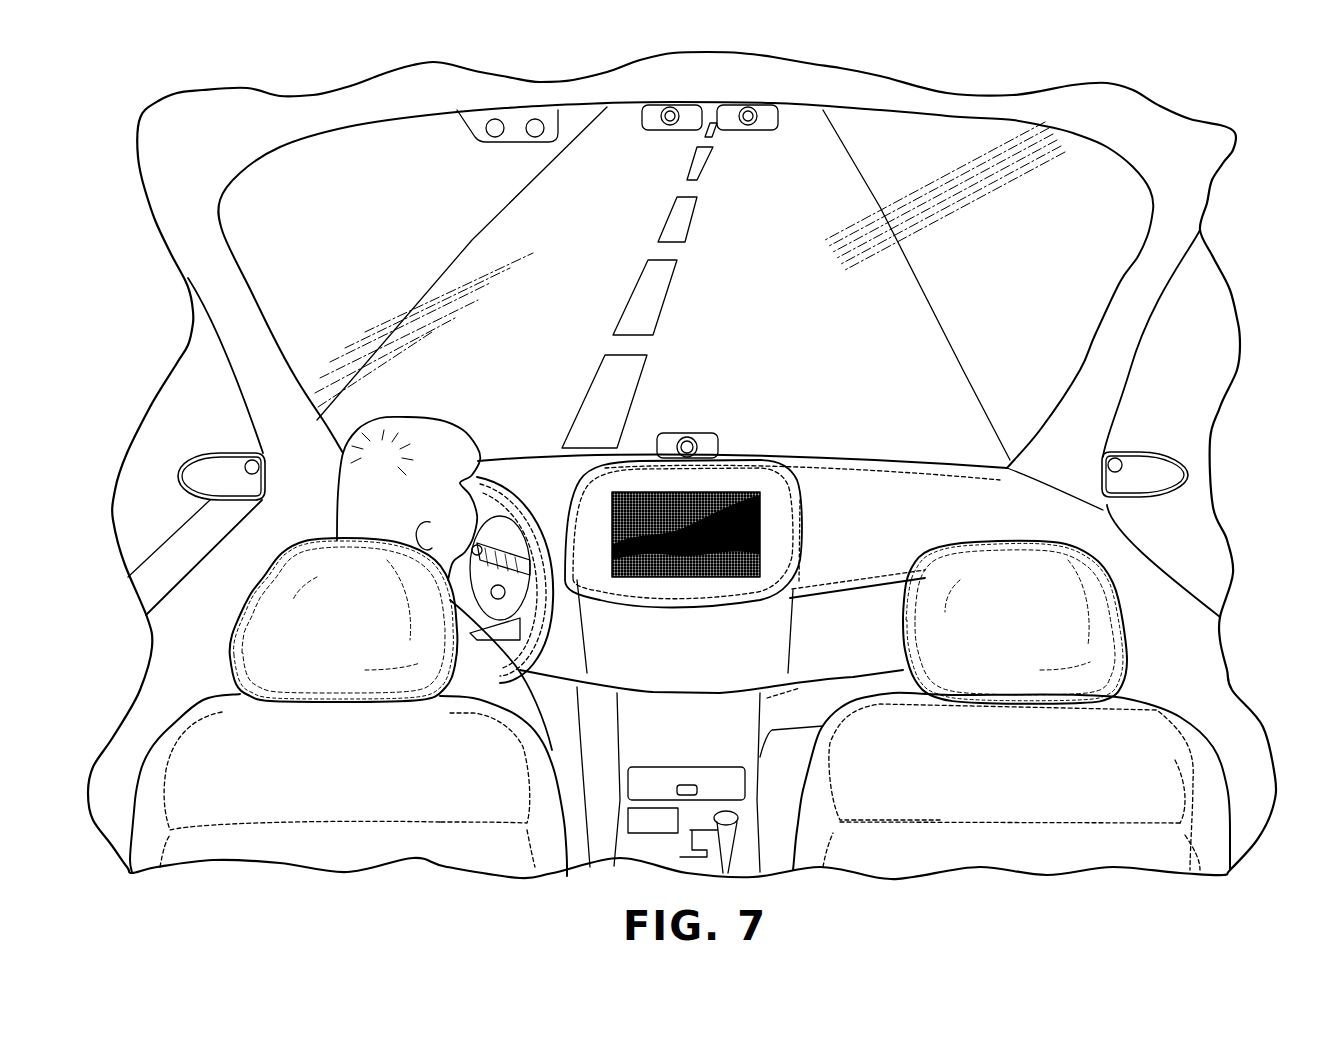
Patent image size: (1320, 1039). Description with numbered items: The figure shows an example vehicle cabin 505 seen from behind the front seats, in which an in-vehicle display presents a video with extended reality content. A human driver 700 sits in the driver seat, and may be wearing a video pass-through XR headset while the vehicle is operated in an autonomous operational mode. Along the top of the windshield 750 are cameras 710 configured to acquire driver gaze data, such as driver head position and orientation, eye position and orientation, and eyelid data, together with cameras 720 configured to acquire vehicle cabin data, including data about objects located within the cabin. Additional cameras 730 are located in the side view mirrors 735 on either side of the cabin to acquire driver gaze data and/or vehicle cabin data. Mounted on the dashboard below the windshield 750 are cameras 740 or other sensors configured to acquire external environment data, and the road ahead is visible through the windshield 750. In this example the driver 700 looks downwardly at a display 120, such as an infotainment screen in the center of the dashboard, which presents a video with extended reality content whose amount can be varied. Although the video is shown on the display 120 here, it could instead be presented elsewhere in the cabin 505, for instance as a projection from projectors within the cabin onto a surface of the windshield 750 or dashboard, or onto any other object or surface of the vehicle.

The vehicle interior / cabin 505 is at (169, 101).
The windshield 750 is at (357, 147).
The cameras 710 is at (495, 140).
The cameras 720 is at (670, 130).
The cameras or other sensors 740 is at (683, 433).
The human driver 700 is at (378, 450).
The cameras 730 is at (203, 457).
The side view mirrors 735 is at (190, 485).
The display 120 is at (760, 532).